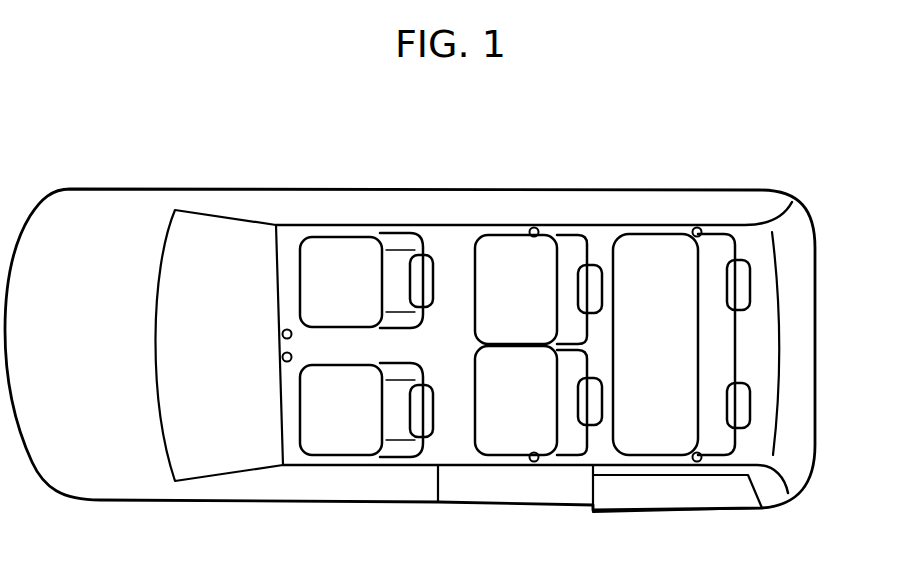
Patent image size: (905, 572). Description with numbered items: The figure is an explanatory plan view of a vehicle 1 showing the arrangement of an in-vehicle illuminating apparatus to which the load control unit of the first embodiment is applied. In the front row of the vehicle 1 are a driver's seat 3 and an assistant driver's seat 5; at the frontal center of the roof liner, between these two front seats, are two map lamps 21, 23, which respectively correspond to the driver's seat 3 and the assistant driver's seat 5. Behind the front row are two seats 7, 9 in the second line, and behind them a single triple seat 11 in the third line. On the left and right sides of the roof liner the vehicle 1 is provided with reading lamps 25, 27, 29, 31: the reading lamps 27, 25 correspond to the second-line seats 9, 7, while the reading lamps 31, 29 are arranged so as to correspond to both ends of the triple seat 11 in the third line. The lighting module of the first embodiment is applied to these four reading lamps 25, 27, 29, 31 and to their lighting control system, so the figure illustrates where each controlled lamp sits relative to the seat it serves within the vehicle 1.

The vehicle 1 is at (109, 207).
The driver's seat 3 is at (328, 247).
The assistant driver's seat 5 is at (335, 443).
The seat in the second line 7 is at (495, 443).
The seat in the second line 9 is at (498, 247).
The seat in the third line 11 is at (725, 345).
The map lamp 21 is at (282, 334).
The map lamp 23 is at (282, 357).
The reading lamp 25 is at (534, 462).
The reading lamp 27 is at (534, 227).
The reading lamp 29 is at (697, 462).
The reading lamp 31 is at (697, 227).